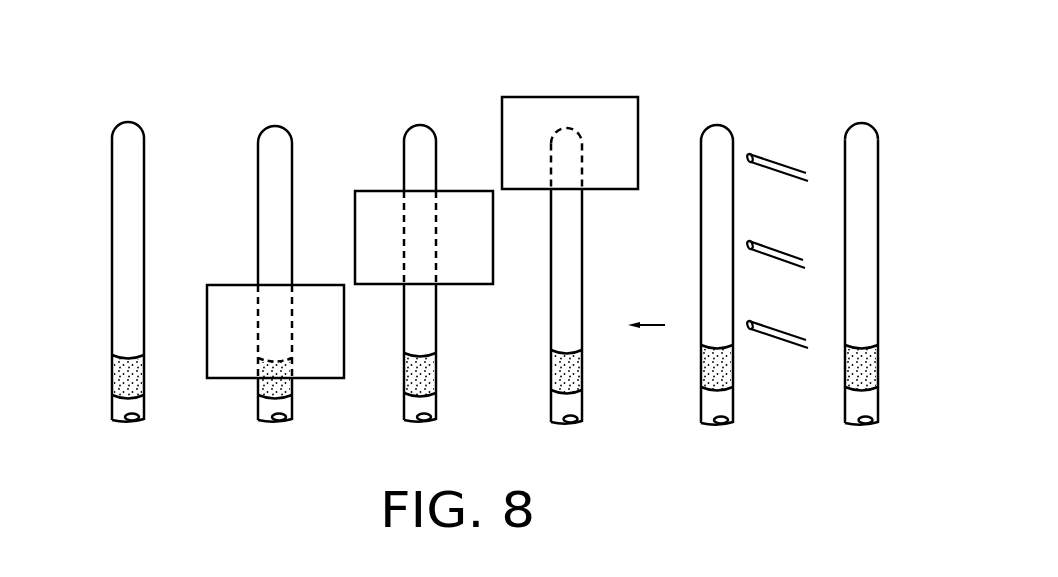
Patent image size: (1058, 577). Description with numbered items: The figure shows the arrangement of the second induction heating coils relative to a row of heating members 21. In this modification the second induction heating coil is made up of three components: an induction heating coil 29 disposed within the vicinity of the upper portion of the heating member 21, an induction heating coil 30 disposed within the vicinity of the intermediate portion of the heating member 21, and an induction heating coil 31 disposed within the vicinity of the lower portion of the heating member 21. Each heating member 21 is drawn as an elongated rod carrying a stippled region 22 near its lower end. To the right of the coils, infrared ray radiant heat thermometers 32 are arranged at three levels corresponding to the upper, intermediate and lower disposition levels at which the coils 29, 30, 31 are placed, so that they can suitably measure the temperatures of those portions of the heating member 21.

The heating member 21 is at (120, 281).
The solder or coating portion 22 is at (117, 378).
The induction heating coil 29 is at (614, 102).
The induction heating coil 30 is at (453, 198).
The induction heating coil 31 is at (311, 295).
The infrared ray radiant heat thermometer 32 is at (772, 160).